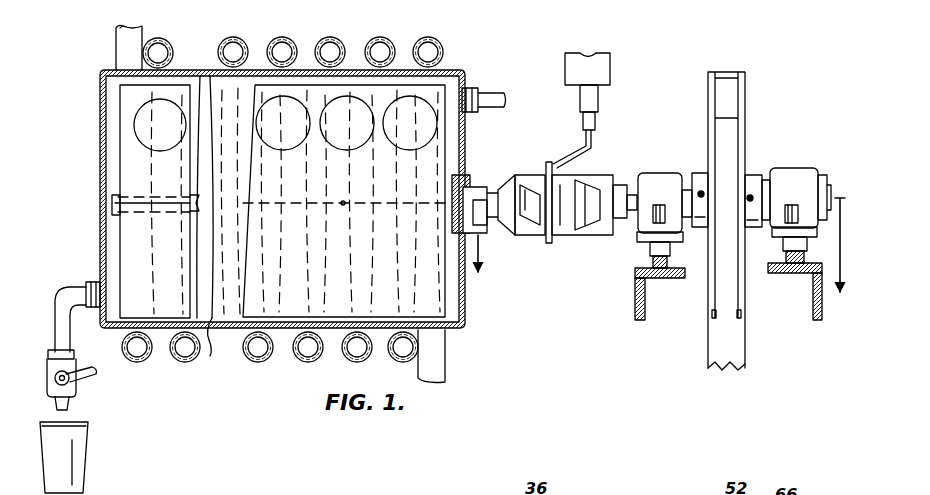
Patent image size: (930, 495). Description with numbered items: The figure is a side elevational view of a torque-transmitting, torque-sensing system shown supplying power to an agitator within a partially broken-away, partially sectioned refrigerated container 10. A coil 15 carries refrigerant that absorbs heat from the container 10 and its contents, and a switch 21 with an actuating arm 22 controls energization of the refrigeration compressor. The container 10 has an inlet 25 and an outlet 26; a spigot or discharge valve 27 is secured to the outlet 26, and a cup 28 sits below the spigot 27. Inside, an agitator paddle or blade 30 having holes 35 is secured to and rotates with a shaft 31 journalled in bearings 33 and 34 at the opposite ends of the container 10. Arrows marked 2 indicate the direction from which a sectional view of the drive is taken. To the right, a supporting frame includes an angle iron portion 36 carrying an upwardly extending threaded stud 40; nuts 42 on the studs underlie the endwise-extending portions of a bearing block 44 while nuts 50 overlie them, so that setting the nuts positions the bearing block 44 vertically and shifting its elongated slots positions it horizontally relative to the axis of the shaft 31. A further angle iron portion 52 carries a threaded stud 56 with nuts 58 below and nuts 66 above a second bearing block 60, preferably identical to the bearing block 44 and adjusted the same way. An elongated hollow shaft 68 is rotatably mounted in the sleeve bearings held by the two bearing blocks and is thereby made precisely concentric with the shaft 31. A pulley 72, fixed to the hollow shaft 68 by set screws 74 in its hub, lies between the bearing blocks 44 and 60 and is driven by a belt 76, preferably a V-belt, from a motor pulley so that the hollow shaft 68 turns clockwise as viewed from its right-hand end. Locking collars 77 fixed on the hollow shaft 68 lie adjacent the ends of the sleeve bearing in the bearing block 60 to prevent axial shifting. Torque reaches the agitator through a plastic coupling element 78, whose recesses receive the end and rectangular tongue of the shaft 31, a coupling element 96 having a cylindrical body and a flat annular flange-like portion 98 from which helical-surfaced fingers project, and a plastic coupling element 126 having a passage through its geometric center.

The section line 2- 2 is at (658, 261).
The refrigerated container 10 is at (200, 70).
The coil 15 is at (362, 36).
The switch 21 is at (610, 62).
The actuating arm 22 is at (578, 150).
The inlet 25 is at (495, 90).
The outlet 26 is at (70, 286).
The spigot 27 is at (80, 392).
The cup 28 is at (90, 452).
The agitator paddle 30 is at (221, 347).
The shaft 31 is at (494, 195).
The bearing 33 is at (104, 220).
The bearing 34 is at (488, 245).
The holes 35 is at (143, 127).
The angle iron portion 36 is at (640, 322).
The threaded stud 40 is at (673, 282).
The nuts 42 is at (648, 258).
The bearing block 44 is at (657, 175).
The nuts 50 is at (637, 234).
The angle iron portion 52 is at (816, 322).
The threaded stud 56 is at (798, 272).
The nuts 58 is at (775, 250).
The bearing block 60 is at (803, 170).
The nuts 66 is at (809, 210).
The elongated hollow shaft 68 is at (687, 190).
The pulley 72 is at (745, 92).
The set screws 74 is at (752, 190).
The belt 76 is at (728, 370).
The locking collars 77 is at (766, 180).
The coupling element 78 is at (510, 200).
The coupling element 96 is at (562, 243).
The flange-like portion 98 is at (548, 246).
The coupling element 126 is at (603, 172).